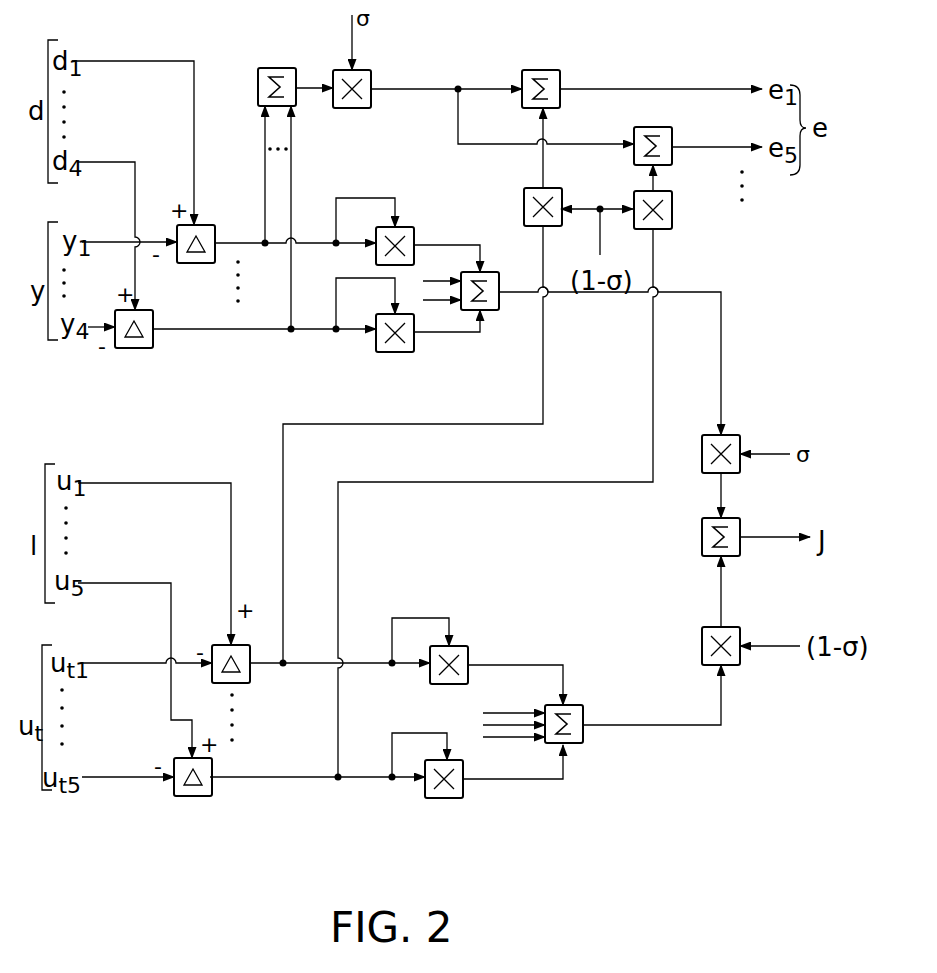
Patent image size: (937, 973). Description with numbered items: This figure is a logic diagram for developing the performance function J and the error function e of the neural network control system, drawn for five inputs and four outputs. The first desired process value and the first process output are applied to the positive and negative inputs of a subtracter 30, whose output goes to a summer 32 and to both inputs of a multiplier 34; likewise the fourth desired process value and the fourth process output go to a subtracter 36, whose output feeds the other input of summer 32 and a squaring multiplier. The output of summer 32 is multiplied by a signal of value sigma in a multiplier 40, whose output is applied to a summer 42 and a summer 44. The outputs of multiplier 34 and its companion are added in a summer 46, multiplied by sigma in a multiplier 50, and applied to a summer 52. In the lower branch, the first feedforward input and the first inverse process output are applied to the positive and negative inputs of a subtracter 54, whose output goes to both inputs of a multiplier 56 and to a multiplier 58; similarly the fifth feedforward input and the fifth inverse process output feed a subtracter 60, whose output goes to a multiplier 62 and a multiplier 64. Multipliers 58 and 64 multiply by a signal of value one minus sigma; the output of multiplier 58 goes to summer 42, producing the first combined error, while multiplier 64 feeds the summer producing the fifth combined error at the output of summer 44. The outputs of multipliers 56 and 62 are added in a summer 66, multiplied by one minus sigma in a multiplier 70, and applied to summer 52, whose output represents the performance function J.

The subtracter 30 is at (218, 225).
The summer 32 is at (278, 68).
The multiplier 34 is at (408, 227).
The subtracter 36 is at (153, 312).
The multiplier 40 is at (372, 108).
The summer 42 is at (554, 70).
The summer 44 is at (672, 165).
The summer 46 is at (498, 310).
The multiplier 50 is at (740, 438).
The summer 52 is at (740, 521).
The subtracter 54 is at (250, 683).
The multiplier 56 is at (467, 648).
The multiplier 58 is at (561, 191).
The subtracter 60 is at (210, 796).
The multiplier 62 is at (463, 800).
The multiplier 64 is at (672, 229).
The summer 66 is at (582, 716).
The multiplier 70 is at (740, 630).